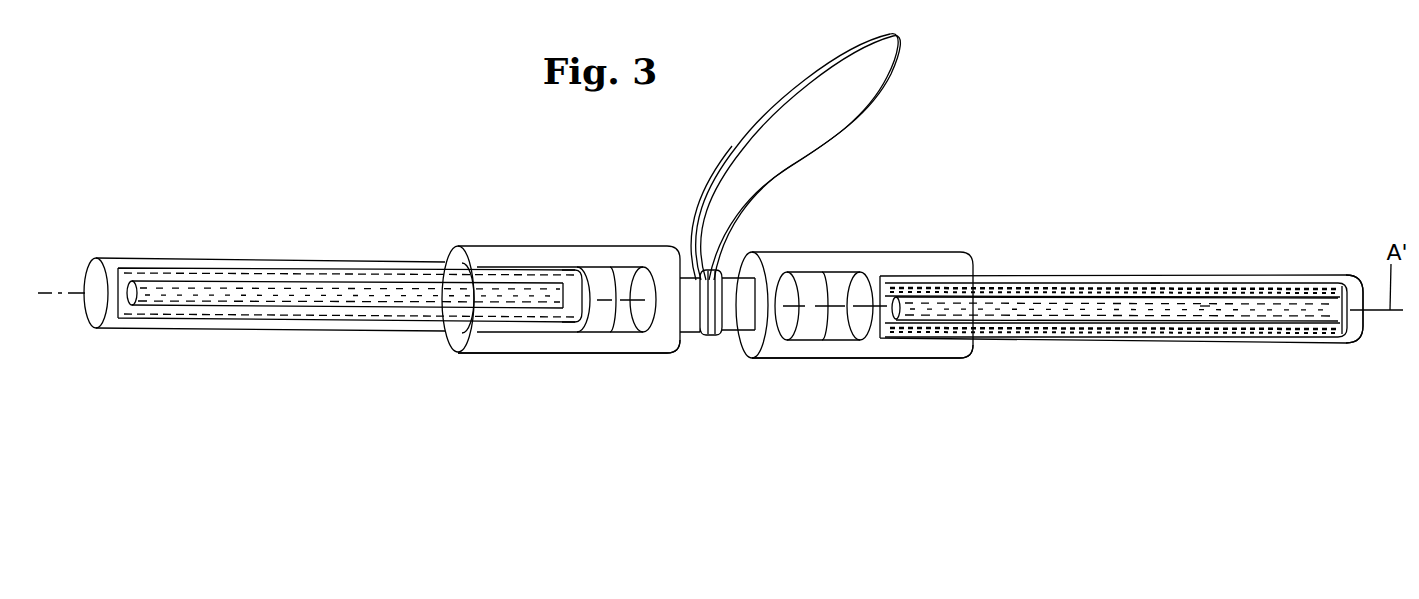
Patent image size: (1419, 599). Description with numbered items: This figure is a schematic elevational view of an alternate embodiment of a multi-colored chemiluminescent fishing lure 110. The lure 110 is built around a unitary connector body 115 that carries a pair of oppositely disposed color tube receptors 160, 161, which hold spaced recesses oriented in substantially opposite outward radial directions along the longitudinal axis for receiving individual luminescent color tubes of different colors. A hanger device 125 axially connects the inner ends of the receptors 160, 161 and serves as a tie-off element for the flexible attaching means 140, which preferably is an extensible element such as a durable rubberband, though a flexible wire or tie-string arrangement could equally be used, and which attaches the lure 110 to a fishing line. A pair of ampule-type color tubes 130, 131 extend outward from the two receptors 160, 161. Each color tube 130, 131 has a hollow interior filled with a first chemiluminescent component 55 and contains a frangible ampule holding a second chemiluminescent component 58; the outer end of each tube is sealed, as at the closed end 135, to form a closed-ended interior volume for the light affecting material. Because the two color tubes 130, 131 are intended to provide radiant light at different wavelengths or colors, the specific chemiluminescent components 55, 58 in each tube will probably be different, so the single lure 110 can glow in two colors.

The multi-colored luminescent fishing lure 110 is at (597, 223).
The unitary connector body 115 is at (783, 247).
The hanger device 125 is at (730, 337).
The color tube 130 is at (1035, 268).
The color tube 131 is at (365, 258).
The closed end 135 is at (1353, 338).
The flexible attaching means 140 is at (897, 98).
The color tube receptor 160 is at (487, 355).
The color tube receptor 161 is at (930, 362).
The first chemiluminescent component 55 is at (1155, 290).
The second chemiluminescent component 58 is at (1205, 310).